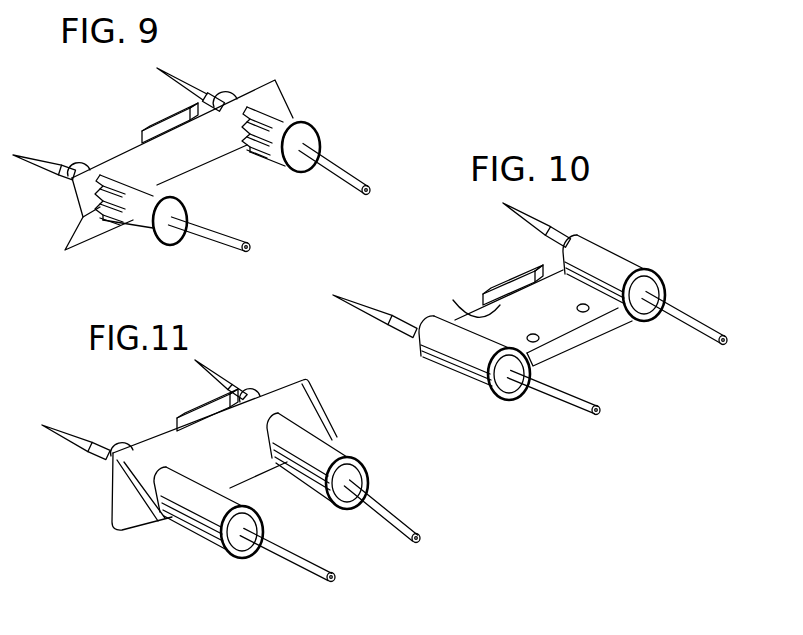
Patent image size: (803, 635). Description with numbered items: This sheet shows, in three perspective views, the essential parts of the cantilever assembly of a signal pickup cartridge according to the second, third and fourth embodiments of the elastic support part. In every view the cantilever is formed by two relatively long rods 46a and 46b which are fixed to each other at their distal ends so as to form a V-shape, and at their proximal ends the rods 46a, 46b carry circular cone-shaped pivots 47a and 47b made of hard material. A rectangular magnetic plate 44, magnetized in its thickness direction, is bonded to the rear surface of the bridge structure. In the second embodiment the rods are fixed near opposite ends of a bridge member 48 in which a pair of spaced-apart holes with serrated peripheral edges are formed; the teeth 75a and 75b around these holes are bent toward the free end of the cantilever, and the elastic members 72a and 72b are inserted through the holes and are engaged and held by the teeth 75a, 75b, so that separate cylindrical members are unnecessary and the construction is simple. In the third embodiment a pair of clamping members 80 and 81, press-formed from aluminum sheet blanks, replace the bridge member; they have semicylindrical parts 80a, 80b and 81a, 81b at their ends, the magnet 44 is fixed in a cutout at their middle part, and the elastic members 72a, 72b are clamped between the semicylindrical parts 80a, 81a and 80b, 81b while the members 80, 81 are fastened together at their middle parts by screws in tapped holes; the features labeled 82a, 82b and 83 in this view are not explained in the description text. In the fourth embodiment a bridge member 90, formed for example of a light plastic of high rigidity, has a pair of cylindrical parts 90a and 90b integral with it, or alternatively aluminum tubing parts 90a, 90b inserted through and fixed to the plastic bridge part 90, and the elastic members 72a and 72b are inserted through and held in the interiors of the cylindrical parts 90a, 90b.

In FIG. 9, the magnetic plate 44 is at (153, 125).
In FIG. 10, the magnetic plate 44 is at (500, 282).
In FIG. 11, the magnetic plate 44 is at (183, 408).
In FIG. 9, the rod 46a is at (247, 237).
In FIG. 10, the rod 46a is at (570, 408).
In FIG. 11, the rod 46a is at (310, 551).
In FIG. 9, the rod 46b is at (358, 170).
In FIG. 10, the rod 46b is at (708, 345).
In FIG. 11, the rod 46b is at (405, 520).
In FIG. 9, the pivot 47a is at (37, 160).
In FIG. 10, the pivot 47a is at (380, 310).
In FIG. 11, the pivot 47a is at (65, 433).
In FIG. 9, the pivot 47b is at (183, 78).
In FIG. 10, the pivot 47b is at (538, 224).
In FIG. 11, the pivot 47b is at (223, 378).
In FIG. 9, the bridge member 48 is at (72, 193).
In FIG. 9, the elastic member 72a is at (170, 246).
In FIG. 10, the elastic member 72a is at (508, 394).
In FIG. 11, the elastic member 72a is at (243, 550).
In FIG. 9, the elastic member 72b is at (320, 145).
In FIG. 10, the elastic member 72b is at (653, 270).
In FIG. 11, the elastic member 72b is at (366, 478).
In FIG. 9, the teeth 75a is at (132, 226).
In FIG. 9, the teeth 75b is at (254, 104).
In FIG. 10, the clamping member 80 is at (563, 312).
In FIG. 10, the semicylindrical part 80a is at (418, 347).
In FIG. 10, the semicylindrical part 80b is at (607, 248).
In FIG. 10, the clamping member 81 is at (619, 324).
In FIG. 10, the semicylindrical part 81a is at (450, 376).
In FIG. 10, the semicylindrical part 81b is at (668, 297).
In FIG. 10, the hole 82a is at (537, 343).
In FIG. 10, the hole 82b is at (587, 313).
In FIG. 10, the slot 83 is at (465, 298).
In FIG. 11, the bridge member 90 is at (120, 495).
In FIG. 11, the cylindrical part 90a is at (190, 527).
In FIG. 11, the cylindrical part 90b is at (338, 446).